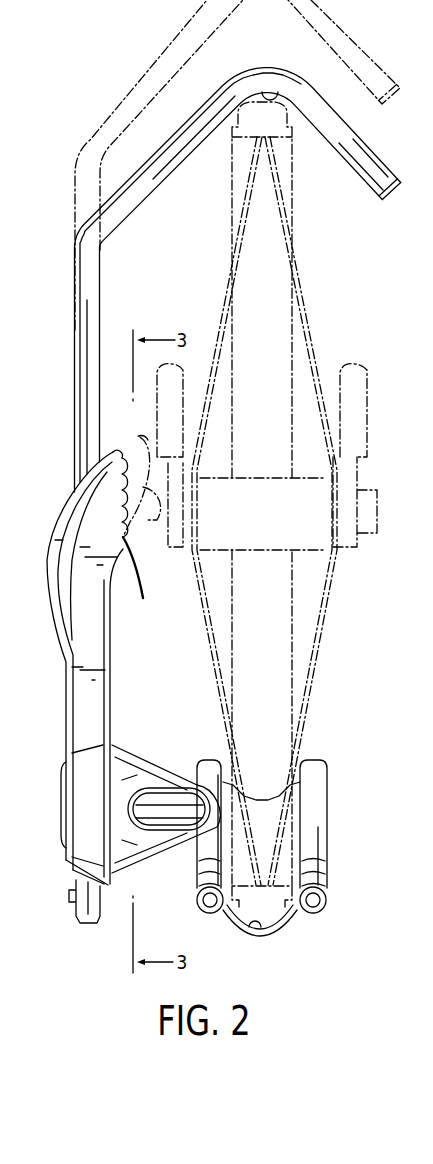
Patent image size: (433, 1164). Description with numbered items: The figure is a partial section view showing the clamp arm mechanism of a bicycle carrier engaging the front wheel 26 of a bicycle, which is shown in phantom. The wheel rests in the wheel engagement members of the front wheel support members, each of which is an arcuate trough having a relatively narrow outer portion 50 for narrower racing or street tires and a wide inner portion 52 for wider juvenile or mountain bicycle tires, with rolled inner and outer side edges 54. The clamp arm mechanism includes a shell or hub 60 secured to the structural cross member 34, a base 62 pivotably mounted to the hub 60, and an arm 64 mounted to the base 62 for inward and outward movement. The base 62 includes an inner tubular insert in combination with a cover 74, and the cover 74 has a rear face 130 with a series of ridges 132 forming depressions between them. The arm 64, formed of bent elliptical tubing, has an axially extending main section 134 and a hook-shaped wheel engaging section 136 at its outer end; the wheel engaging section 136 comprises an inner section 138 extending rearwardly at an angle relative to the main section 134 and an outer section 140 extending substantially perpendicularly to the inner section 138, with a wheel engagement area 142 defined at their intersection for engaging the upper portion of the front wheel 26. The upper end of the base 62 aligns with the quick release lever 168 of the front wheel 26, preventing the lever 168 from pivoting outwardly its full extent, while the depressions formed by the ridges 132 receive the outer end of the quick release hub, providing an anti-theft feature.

The front wheel 26 is at (312, 271).
The structural cross member 34 is at (141, 832).
The narrow outer portion 50 is at (249, 922).
The wide inner portion 52 is at (291, 908).
The rolled inner and outer side edges 54 is at (330, 867).
The hub 60 is at (158, 755).
The base 62 is at (38, 655).
The arm 64 is at (52, 296).
The cover 74 is at (54, 708).
The rear face 130 is at (140, 538).
The ridges 132 is at (138, 556).
The main section 134 is at (66, 364).
The wheel engaging section 136 is at (152, 45).
The inner section 138 is at (170, 167).
The outer section 140 is at (333, 151).
The wheel engagement area 142 is at (277, 90).
The quick release lever 168 is at (135, 438).